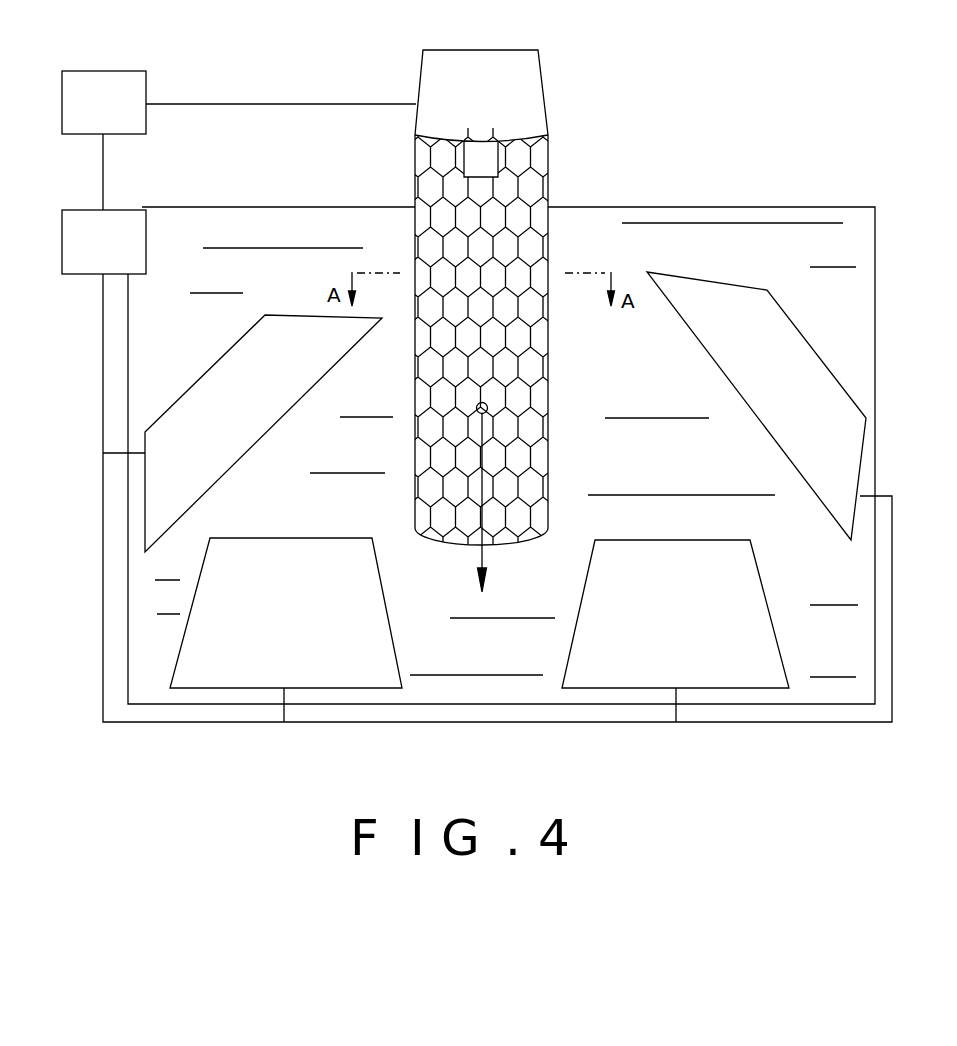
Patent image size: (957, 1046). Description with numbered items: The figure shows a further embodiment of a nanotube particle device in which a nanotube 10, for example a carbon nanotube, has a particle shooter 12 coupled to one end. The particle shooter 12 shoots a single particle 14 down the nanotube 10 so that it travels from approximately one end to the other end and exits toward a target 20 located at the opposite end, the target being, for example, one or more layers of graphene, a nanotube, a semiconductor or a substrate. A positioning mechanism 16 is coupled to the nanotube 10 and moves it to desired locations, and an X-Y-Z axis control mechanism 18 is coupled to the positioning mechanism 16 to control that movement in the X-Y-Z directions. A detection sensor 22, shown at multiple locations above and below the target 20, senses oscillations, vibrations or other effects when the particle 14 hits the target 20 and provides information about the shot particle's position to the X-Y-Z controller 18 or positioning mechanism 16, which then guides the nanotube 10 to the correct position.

The nanotube 10 is at (549, 185).
The particle shooter 12 is at (542, 98).
The particle 14 is at (488, 408).
The positioning mechanism 16 is at (239, 140).
The X-Y-Z axis control mechanism 18 is at (104, 242).
The target 20 is at (505, 698).
The detection sensor 22 is at (193, 418).